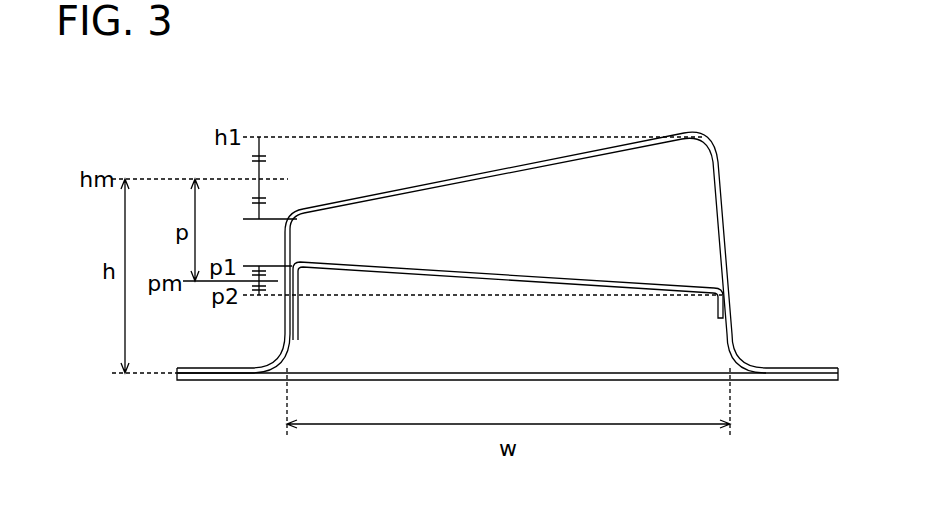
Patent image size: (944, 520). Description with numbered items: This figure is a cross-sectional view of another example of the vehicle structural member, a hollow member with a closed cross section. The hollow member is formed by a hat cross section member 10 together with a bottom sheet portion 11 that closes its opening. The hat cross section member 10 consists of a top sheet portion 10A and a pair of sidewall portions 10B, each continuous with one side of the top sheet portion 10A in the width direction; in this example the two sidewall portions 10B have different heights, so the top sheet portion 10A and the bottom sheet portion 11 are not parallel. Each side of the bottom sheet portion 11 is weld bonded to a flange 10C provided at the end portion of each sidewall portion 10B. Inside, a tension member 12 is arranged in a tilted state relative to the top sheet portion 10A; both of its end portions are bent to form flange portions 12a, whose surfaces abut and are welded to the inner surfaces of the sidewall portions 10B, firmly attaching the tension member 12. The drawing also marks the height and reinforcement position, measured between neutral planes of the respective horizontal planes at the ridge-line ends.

The hat cross section member 10 is at (501, 204).
The top sheet portion 10A is at (372, 197).
The sidewall portion 10B is at (292, 253).
The flange 10C is at (200, 367).
The bottom sheet portion 11 is at (493, 372).
The tension member 12 is at (508, 301).
The flange portion 12a is at (297, 282).